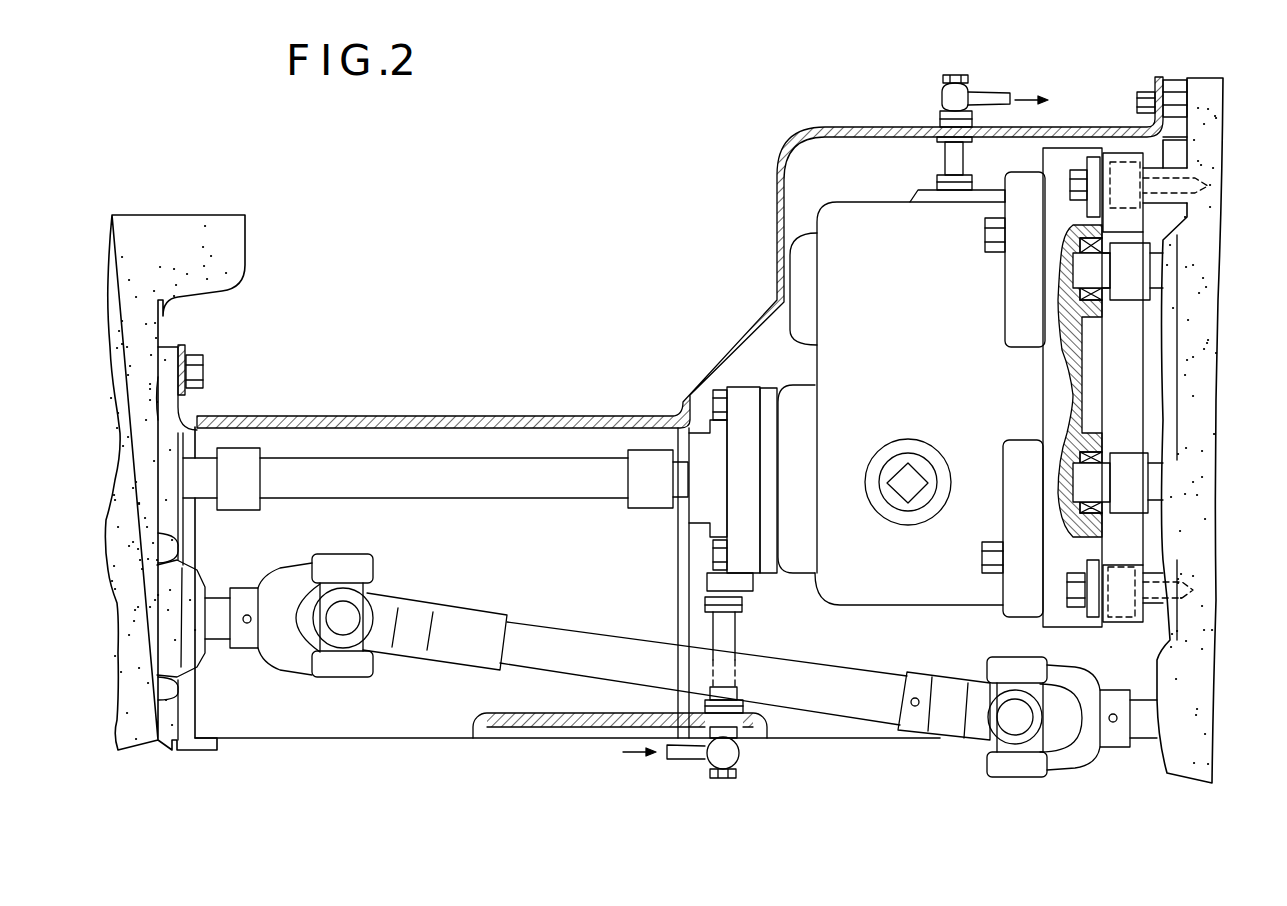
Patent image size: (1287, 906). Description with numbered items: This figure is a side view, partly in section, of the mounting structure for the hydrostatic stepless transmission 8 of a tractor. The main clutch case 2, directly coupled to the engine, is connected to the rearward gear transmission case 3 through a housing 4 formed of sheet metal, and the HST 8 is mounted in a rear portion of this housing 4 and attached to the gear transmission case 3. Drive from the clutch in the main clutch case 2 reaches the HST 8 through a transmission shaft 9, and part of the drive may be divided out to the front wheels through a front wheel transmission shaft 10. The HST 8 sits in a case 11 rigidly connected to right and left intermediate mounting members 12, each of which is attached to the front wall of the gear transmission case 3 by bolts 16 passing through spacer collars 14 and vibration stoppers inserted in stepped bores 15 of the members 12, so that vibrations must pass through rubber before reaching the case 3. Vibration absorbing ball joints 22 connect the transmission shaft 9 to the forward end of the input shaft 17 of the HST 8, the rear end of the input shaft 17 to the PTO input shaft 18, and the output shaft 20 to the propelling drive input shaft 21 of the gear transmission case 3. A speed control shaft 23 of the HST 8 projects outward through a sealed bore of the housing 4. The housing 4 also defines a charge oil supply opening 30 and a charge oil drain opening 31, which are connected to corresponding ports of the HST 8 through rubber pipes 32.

The main clutch case 2 is at (153, 323).
The gear transmission case 3 is at (1160, 772).
The housing 4 is at (607, 412).
The hydrostatic stepless transmission 8 is at (818, 204).
The transmission shaft 9 is at (445, 462).
The front wheel transmission shaft 10 is at (872, 703).
The case 11 is at (843, 285).
The intermediate mounting member 12 is at (1117, 417).
The spacer collar 14 is at (1167, 168).
The stepped bore 15 is at (1121, 144).
The bolt 16 is at (1070, 187).
The input shaft 17 is at (680, 480).
The PTO input shaft 18 is at (1153, 483).
The output shaft 20 is at (1090, 268).
The propelling drive input shaft 21 is at (1153, 272).
The vibration absorbing ball joint 22 is at (638, 475).
The speed control shaft 23 is at (907, 477).
The charge oil supply opening 30 is at (735, 757).
The charge oil drain opening 31 is at (940, 98).
The rubber pipe 32 is at (937, 163).